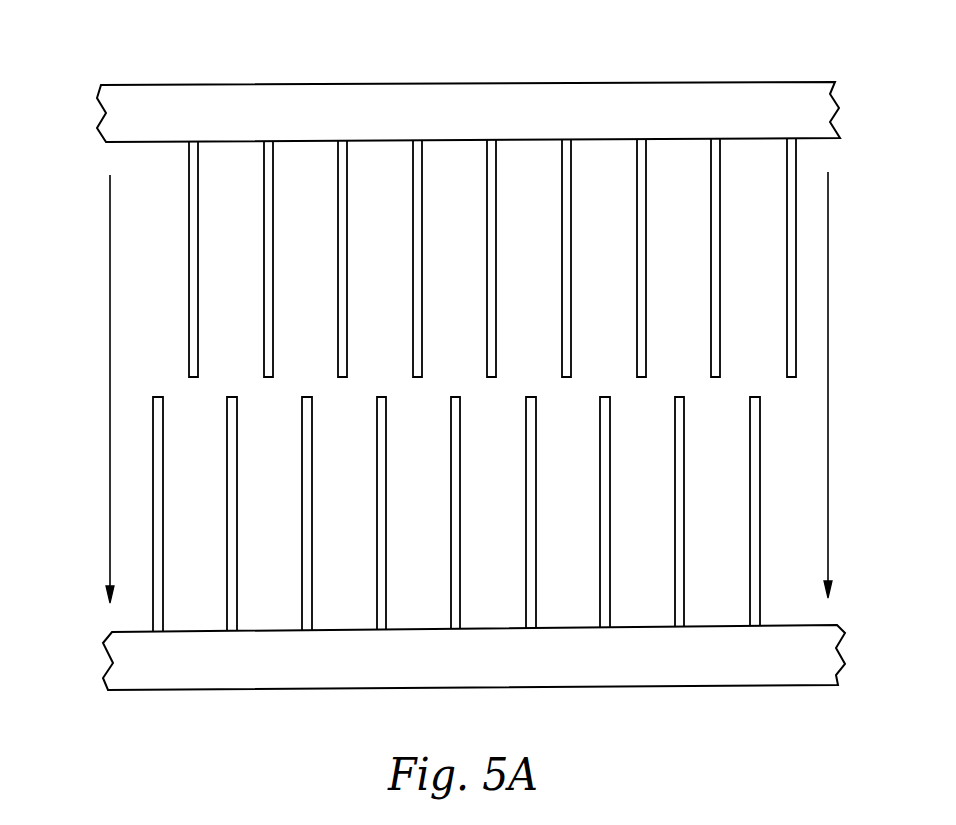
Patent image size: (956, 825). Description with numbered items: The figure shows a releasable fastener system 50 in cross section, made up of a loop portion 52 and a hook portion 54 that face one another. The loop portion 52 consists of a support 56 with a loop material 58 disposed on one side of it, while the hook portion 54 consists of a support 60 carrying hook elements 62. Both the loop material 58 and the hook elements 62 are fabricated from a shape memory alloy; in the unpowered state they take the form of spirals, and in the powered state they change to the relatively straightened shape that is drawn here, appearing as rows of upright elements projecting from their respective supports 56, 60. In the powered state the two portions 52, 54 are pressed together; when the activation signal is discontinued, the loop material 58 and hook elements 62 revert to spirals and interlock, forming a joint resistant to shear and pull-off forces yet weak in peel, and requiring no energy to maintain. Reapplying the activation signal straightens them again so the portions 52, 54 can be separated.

The releasable fastener system 50 is at (290, 73).
The loop portion 52 is at (93, 172).
The hook portion 54 is at (83, 634).
The support 56 is at (672, 90).
The loop material 58 is at (562, 253).
The support 60 is at (723, 677).
The hook elements 62 is at (603, 517).